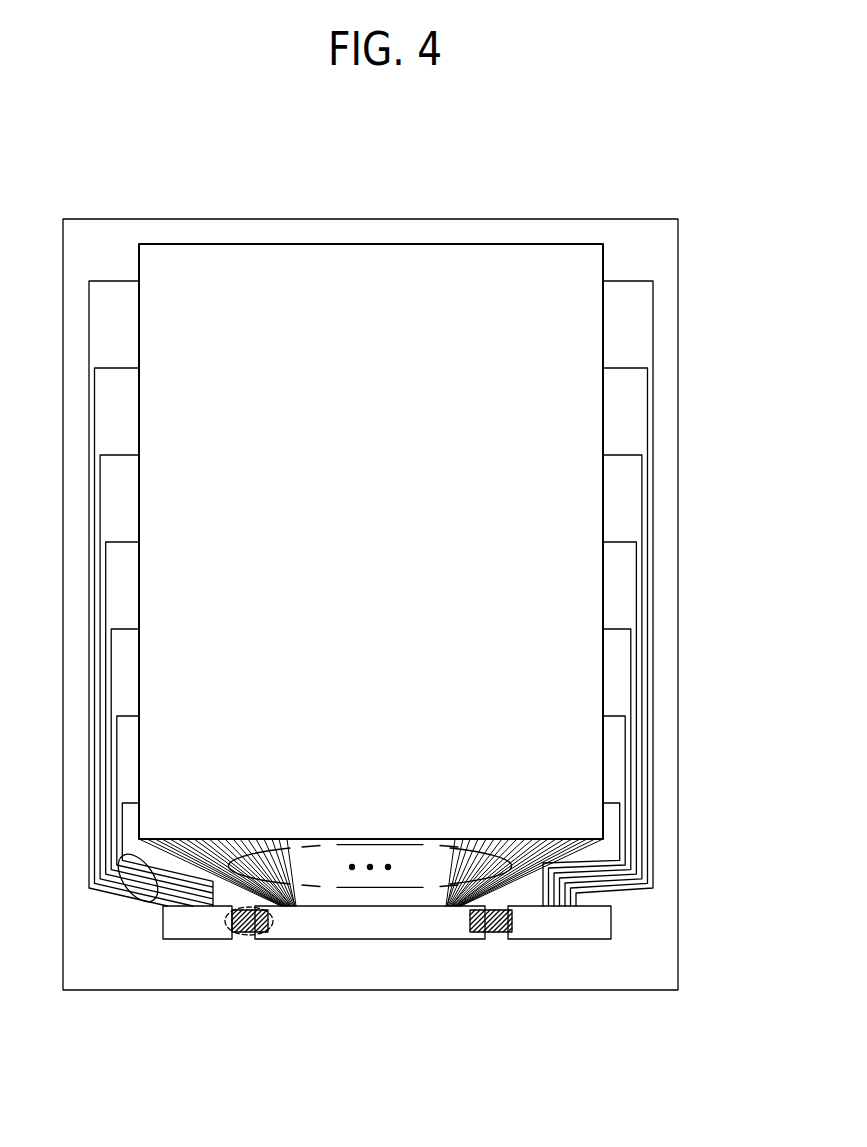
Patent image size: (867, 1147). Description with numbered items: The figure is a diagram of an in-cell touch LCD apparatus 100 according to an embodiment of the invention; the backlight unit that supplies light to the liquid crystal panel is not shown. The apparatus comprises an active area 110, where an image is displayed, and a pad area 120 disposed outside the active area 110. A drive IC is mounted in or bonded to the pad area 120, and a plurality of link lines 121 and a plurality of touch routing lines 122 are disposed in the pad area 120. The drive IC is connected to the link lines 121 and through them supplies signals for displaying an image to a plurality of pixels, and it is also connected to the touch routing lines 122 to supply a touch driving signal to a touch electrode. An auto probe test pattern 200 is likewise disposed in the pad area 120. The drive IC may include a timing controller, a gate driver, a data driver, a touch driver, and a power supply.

The in-cell touch LCD apparatus 100 is at (400, 177).
The active area 110 is at (700, 839).
The pad area 120 is at (700, 840).
The link lines 121 is at (362, 888).
The touch routing lines 122 is at (124, 902).
The auto probe test pattern 200 is at (246, 937).